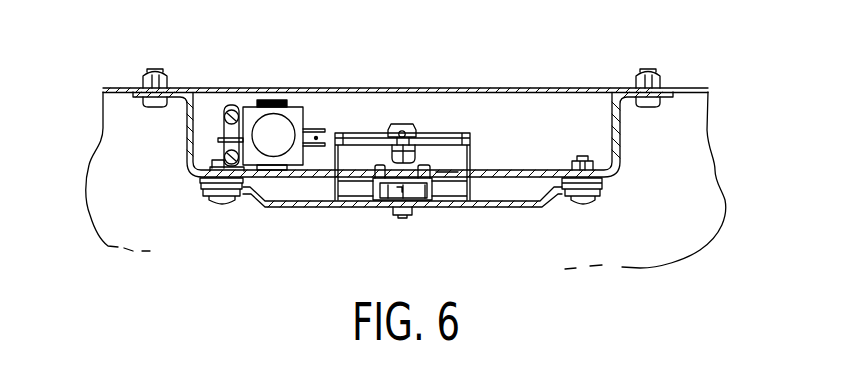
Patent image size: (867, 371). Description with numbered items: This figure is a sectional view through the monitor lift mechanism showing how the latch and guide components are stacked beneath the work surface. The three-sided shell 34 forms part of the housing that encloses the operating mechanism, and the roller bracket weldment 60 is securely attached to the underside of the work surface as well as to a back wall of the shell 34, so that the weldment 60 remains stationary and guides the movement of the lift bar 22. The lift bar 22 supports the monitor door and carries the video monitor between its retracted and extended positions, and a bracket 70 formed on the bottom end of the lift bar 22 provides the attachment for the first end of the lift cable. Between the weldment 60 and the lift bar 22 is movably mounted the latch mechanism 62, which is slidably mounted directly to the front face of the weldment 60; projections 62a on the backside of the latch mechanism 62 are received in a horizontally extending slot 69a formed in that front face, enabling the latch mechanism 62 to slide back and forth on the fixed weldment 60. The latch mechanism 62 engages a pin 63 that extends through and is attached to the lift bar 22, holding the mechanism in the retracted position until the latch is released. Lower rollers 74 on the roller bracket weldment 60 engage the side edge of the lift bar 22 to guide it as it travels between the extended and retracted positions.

The lift bar 22 is at (507, 206).
The shell 34 is at (516, 88).
The roller bracket weldment 60 is at (535, 176).
The latch mechanism 62 is at (375, 197).
The projections 62a is at (426, 165).
The pin 63 is at (401, 216).
The slot 69a is at (440, 170).
The bracket 70 is at (444, 133).
The lower rollers 74 is at (217, 204).